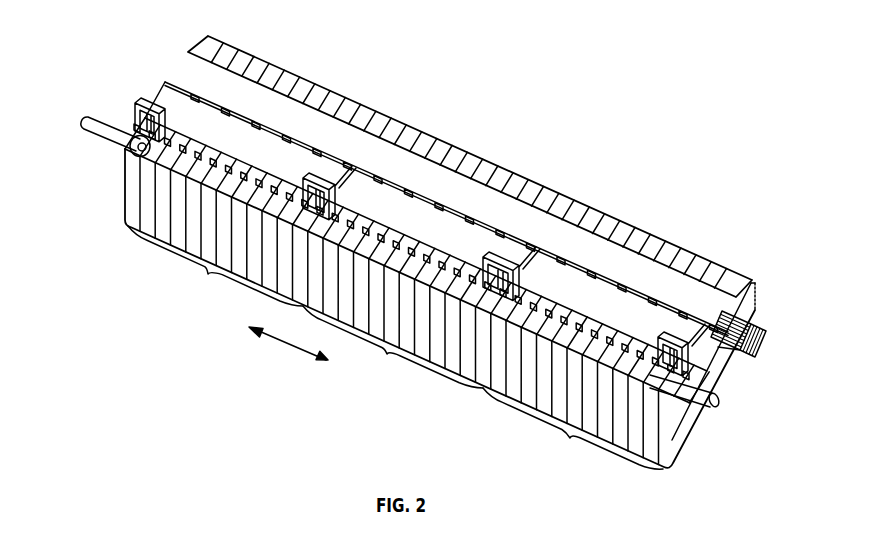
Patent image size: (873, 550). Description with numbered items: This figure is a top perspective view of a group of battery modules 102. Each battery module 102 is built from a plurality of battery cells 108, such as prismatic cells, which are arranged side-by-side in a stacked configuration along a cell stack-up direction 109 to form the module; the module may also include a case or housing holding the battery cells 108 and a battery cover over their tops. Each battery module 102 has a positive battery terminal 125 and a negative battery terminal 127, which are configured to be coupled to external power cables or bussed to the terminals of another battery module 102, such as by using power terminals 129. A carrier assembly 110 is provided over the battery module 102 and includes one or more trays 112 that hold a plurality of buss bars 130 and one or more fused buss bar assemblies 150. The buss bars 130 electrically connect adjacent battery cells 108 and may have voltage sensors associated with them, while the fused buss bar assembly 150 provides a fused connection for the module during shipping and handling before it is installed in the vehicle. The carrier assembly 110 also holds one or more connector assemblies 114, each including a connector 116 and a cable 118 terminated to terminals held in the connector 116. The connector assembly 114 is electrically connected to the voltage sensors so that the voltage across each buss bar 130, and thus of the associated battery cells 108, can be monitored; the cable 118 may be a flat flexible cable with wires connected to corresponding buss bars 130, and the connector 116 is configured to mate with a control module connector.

The battery module 102 is at (208, 276).
The battery cell 108 is at (712, 303).
The cell stack-up direction 109 is at (293, 347).
The carrier assembly 110 is at (297, 123).
The tray 112 is at (745, 283).
The connector assembly 114 is at (768, 327).
The connector 116 is at (767, 334).
The cable 118 is at (717, 348).
The positive battery terminal 125 is at (681, 362).
The negative battery terminal 127 is at (142, 130).
The power terminal 129 is at (138, 150).
The buss bar 130 is at (487, 296).
The fused buss bar assembly 150 is at (137, 140).